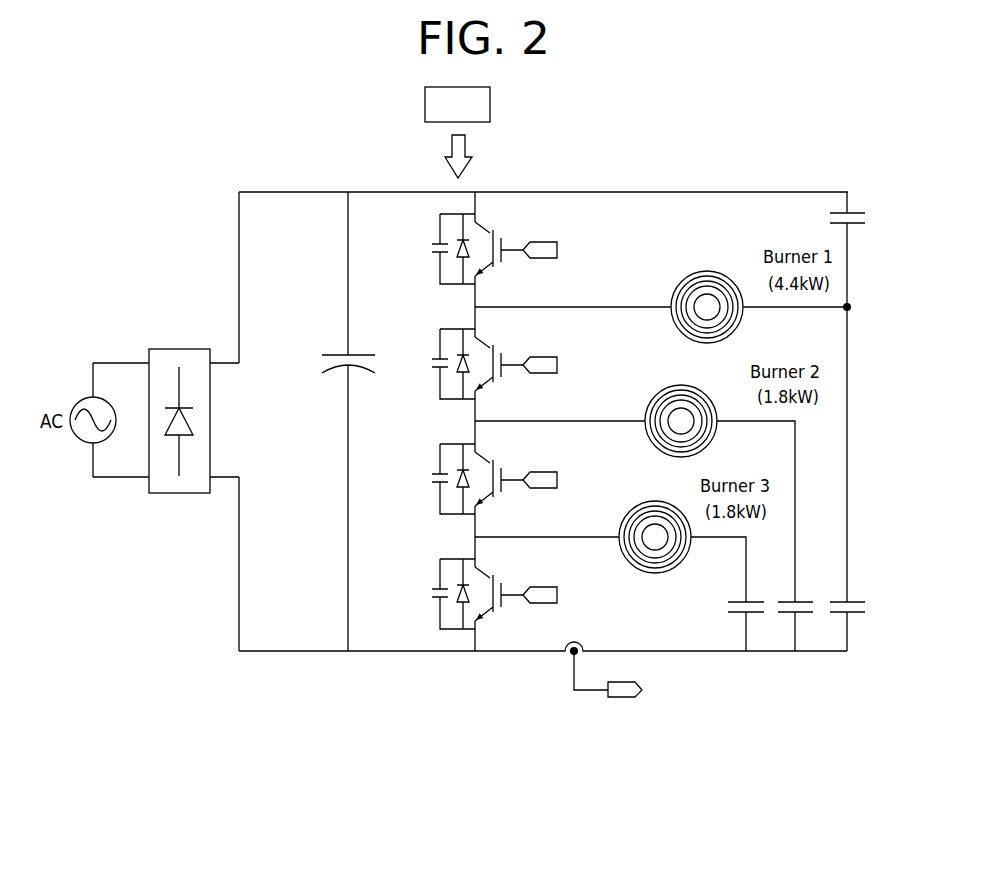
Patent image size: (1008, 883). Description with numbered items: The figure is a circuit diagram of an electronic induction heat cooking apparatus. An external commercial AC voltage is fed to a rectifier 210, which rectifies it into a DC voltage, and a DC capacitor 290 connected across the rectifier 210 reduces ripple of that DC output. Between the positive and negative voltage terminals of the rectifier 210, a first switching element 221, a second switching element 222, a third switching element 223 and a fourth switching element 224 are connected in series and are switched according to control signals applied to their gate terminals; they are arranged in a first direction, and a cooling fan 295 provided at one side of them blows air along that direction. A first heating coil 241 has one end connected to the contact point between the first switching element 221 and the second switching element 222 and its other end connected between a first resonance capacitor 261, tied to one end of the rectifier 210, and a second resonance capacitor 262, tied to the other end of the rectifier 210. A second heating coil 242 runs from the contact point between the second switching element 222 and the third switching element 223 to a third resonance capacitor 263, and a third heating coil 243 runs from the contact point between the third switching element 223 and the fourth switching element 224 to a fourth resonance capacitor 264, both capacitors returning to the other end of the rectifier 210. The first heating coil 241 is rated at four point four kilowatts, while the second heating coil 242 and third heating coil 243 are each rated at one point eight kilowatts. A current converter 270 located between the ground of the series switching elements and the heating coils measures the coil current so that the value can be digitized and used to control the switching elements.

The rectifier 210 is at (179, 349).
The DC capacitor 290 is at (322, 362).
The cooling fan 295 is at (490, 103).
The first switching element 221 is at (516, 243).
The second switching element 222 is at (516, 358).
The third switching element 223 is at (516, 473).
The fourth switching element 224 is at (516, 588).
The first heating coil 241 is at (678, 284).
The second heating coil 242 is at (655, 400).
The third heating coil 243 is at (632, 510).
The first resonance capacitor 261 is at (857, 200).
The second resonance capacitor 262 is at (852, 618).
The third resonance capacitor 263 is at (800, 618).
The fourth resonance capacitor 264 is at (752, 618).
The current converter 270 is at (621, 698).